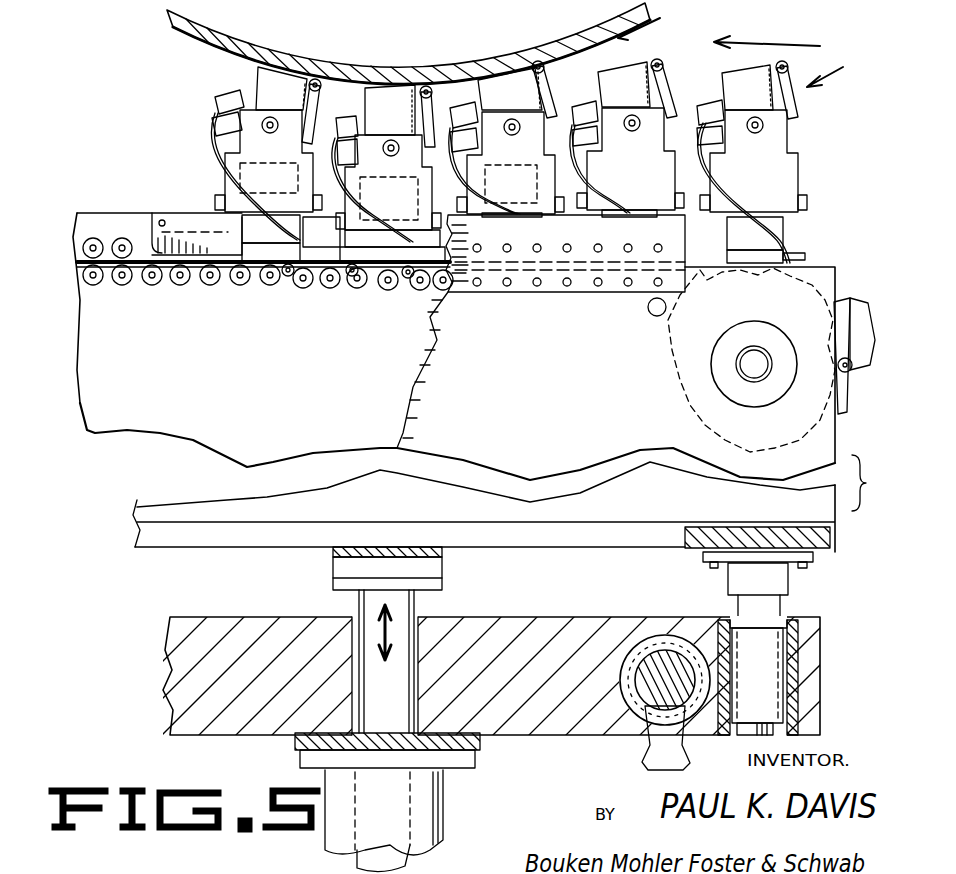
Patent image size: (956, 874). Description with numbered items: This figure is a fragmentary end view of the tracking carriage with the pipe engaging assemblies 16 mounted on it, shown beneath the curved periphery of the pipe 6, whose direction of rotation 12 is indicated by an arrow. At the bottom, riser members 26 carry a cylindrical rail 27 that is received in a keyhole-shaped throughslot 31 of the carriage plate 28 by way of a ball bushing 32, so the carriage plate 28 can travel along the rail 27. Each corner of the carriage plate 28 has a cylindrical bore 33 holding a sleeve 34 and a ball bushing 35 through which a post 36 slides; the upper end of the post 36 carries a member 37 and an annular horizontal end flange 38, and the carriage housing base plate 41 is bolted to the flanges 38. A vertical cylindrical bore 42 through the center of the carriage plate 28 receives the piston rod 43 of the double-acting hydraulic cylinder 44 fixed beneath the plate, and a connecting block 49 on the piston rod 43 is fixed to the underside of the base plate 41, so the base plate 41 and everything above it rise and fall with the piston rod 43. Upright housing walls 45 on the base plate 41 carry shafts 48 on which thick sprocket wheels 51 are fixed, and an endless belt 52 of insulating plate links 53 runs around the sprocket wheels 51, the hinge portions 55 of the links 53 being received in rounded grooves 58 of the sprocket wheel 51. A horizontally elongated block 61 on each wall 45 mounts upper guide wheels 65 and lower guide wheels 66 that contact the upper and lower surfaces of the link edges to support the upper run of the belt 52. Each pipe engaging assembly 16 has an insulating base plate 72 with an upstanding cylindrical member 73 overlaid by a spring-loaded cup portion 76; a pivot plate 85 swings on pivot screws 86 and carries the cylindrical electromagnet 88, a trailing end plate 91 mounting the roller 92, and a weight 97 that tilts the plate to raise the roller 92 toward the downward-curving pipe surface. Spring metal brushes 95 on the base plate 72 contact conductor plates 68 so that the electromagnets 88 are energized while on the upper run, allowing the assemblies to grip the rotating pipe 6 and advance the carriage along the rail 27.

The pipe 6 is at (187, 37).
The direction of rotation arrow 12 is at (656, 24).
The pipe engaging assembly 16 is at (792, 61).
The riser member 26 is at (652, 747).
The cylindrical rail 27 is at (645, 690).
The carriage plate 28 is at (165, 682).
The throughslot 31 is at (638, 660).
The ball bushing 32 is at (668, 655).
The cylindrical bore 33 is at (798, 622).
The sleeve 34 is at (798, 690).
The ball bushing 35 is at (775, 672).
The post 36 is at (780, 605).
The member 37 is at (728, 578).
The annular horizontal end flange 38 is at (831, 550).
The carriage housing base plate 41 is at (575, 545).
The vertical cylindrical bore 42 is at (414, 680).
The piston rod 43 is at (403, 637).
The hydraulic cylinder 44 is at (446, 812).
The housing wall 45 is at (233, 510).
The shaft 48 is at (748, 370).
The connecting block 49 is at (334, 568).
The sprocket wheel 51 is at (660, 370).
The endless belt 52 is at (840, 400).
The plate link 53 is at (373, 300).
The hinge portion 55 is at (757, 351).
The rounded groove 58 is at (755, 295).
The horizontally elongated block 61 is at (580, 255).
The upper guide wheel 65 is at (97, 240).
The lower guide wheel 66 is at (142, 285).
The conductor plate 68 is at (150, 240).
The base plate 72 is at (263, 253).
The cylindrical member 73 is at (242, 232).
The cup portion 76 is at (250, 173).
The pivot plate 85 is at (723, 150).
The pivot screw 86 is at (268, 134).
The electromagnet 88 is at (275, 82).
The end plate 91 is at (793, 98).
The roller 92 is at (320, 80).
The brush 95 is at (806, 256).
The weight 97 is at (230, 102).